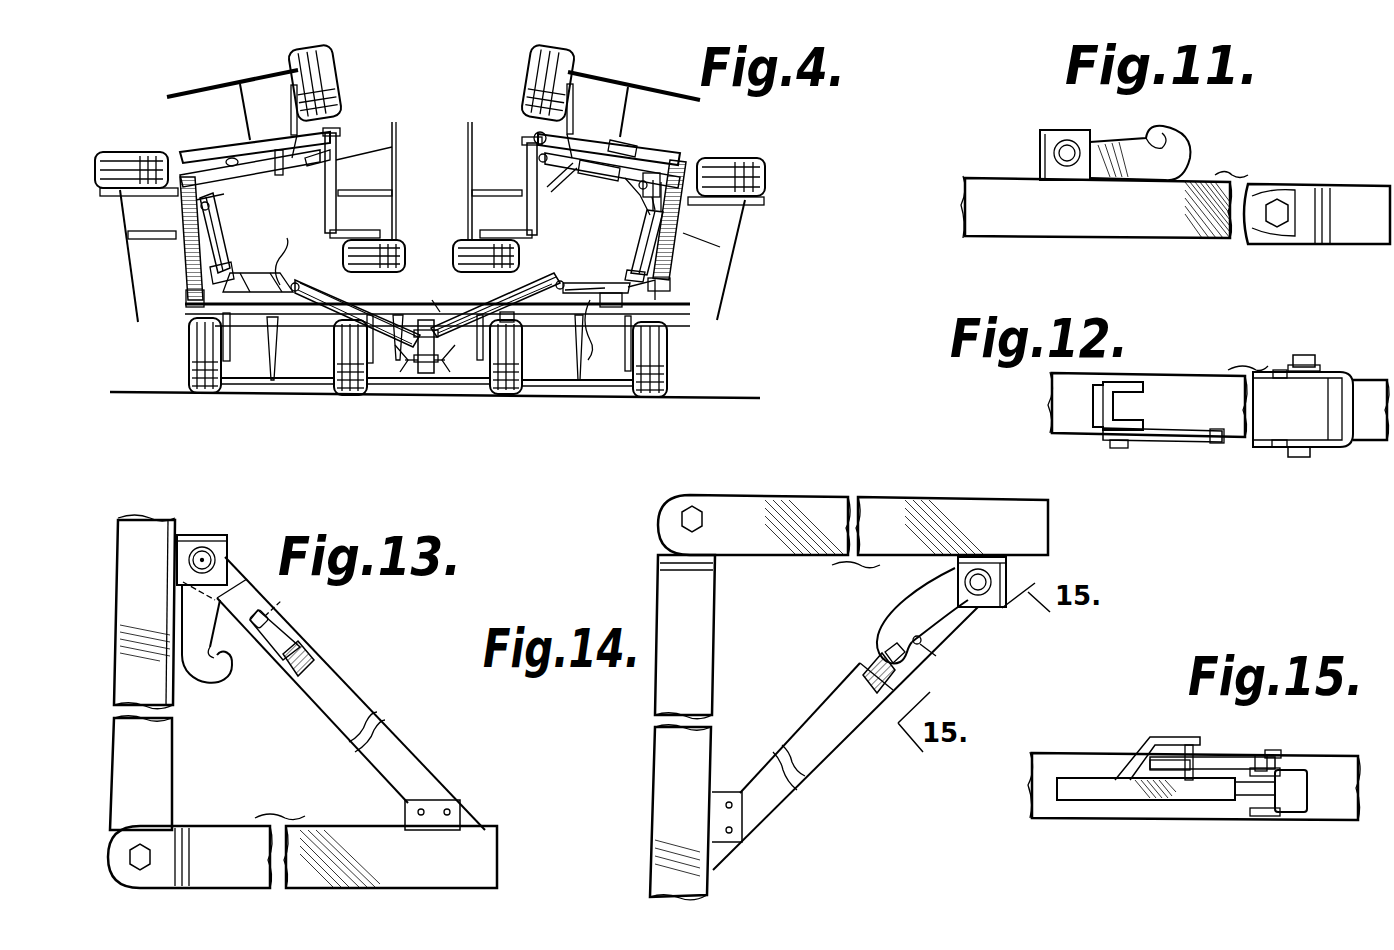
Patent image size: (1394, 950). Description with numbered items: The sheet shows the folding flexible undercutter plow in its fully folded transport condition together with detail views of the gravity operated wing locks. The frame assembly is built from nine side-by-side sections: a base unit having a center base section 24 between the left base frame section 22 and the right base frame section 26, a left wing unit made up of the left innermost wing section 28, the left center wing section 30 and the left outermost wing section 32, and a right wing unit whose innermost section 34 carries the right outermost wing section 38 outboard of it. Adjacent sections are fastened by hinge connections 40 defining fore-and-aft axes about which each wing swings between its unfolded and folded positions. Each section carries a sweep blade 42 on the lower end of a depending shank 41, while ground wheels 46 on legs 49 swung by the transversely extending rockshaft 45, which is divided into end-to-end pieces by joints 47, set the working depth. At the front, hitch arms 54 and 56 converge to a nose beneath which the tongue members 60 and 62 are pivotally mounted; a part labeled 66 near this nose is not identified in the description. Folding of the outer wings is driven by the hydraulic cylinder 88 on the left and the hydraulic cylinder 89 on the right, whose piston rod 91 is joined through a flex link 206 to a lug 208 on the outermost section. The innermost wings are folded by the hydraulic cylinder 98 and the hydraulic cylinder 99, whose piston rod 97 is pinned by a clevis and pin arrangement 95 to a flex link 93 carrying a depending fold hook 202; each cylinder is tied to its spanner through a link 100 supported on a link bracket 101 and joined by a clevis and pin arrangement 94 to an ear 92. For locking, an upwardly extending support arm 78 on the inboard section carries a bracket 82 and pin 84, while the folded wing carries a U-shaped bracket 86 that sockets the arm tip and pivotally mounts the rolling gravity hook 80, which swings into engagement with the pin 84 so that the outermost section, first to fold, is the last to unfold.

In FIG. 4, the left base frame section 22 is at (312, 320).
In FIG. 4, the center base section 24 is at (450, 304).
In FIG. 4, the right base frame section 26 is at (598, 320).
In FIG. 4, the left innermost wing section 28 is at (181, 266).
In FIG. 4, the left center wing section 30 is at (197, 155).
In FIG. 11, the left center wing section 30 is at (1362, 188).
In FIG. 12, the left center wing section 30 is at (1365, 440).
In FIG. 14, the left center wing section 30 is at (712, 690).
In FIG. 4, the left outermost wing section 32 is at (336, 214).
In FIG. 11, the left outermost wing section 32 is at (1052, 232).
In FIG. 12, the left outermost wing section 32 is at (1055, 418).
In FIG. 13, the left outermost wing section 32 is at (118, 578).
In FIG. 14, the left outermost wing section 32 is at (818, 478).
In FIG. 15, the left outermost wing section 32 is at (1325, 770).
In FIG. 4, the right innermost wing section 34 is at (672, 272).
In FIG. 4, the right outermost wing section 38 is at (530, 215).
In FIG. 11, the hinge connection 40 is at (1280, 198).
In FIG. 12, the hinge connection 40 is at (1315, 358).
In FIG. 13, the hinge connection 40 is at (128, 858).
In FIG. 14, the hinge connection 40 is at (680, 520).
In FIG. 4, the shank 41 is at (155, 236).
In FIG. 4, the sweep blade 42 is at (190, 88).
In FIG. 4, the rockshaft 45 is at (338, 165).
In FIG. 4, the ground wheel 46 is at (668, 392).
In FIG. 4, the joint 47 is at (514, 336).
In FIG. 4, the leg 49 is at (290, 108).
In FIG. 4, the hitch arm 54 is at (345, 300).
In FIG. 4, the hitch arm 56 is at (504, 300).
In FIG. 4, the tongue member 60 is at (403, 362).
In FIG. 4, the tongue member 62 is at (440, 362).
In FIG. 4, the hitch post 66 is at (418, 375).
In FIG. 4, the support arm 78 is at (218, 194).
In FIG. 13, the support arm 78 is at (318, 725).
In FIG. 14, the support arm 78 is at (828, 748).
In FIG. 15, the support arm 78 is at (1082, 796).
In FIG. 4, the rolling gravity hook 80 is at (243, 152).
In FIG. 11, the rolling gravity hook 80 is at (1142, 142).
In FIG. 12, the rolling gravity hook 80 is at (1168, 444).
In FIG. 13, the rolling gravity hook 80 is at (208, 688).
In FIG. 14, the rolling gravity hook 80 is at (882, 603).
In FIG. 15, the rolling gravity hook 80 is at (1242, 760).
In FIG. 4, the bracket 82 is at (593, 182).
In FIG. 13, the bracket 82 is at (296, 632).
In FIG. 14, the bracket 82 is at (860, 668).
In FIG. 15, the bracket 82 is at (1142, 744).
In FIG. 13, the pin 84 is at (277, 608).
In FIG. 14, the pin 84 is at (941, 657).
In FIG. 11, the U-shaped bracket 86 is at (1040, 130).
In FIG. 12, the U-shaped bracket 86 is at (1143, 384).
In FIG. 13, the U-shaped bracket 86 is at (215, 535).
In FIG. 14, the U-shaped bracket 86 is at (990, 607).
In FIG. 15, the U-shaped bracket 86 is at (1258, 822).
In FIG. 4, the hydraulic cylinder 88 is at (268, 178).
In FIG. 4, the hydraulic cylinder 89 is at (612, 150).
In FIG. 4, the piston rod 91 is at (603, 137).
In FIG. 4, the ear 92 is at (302, 280).
In FIG. 4, the flex link 93 is at (660, 165).
In FIG. 4, the clevis and pin arrangement 94 is at (575, 285).
In FIG. 4, the clevis and pin arrangement 95 is at (212, 208).
In FIG. 4, the piston rod 97 is at (640, 203).
In FIG. 4, the hydraulic cylinder 98 is at (219, 242).
In FIG. 4, the hydraulic cylinder 99 is at (640, 230).
In FIG. 4, the link 100 is at (283, 255).
In FIG. 4, the link bracket 101 is at (258, 285).
In FIG. 4, the fold hook 202 is at (676, 214).
In FIG. 4, the flex link 206 is at (542, 135).
In FIG. 4, the lug 208 is at (540, 170).